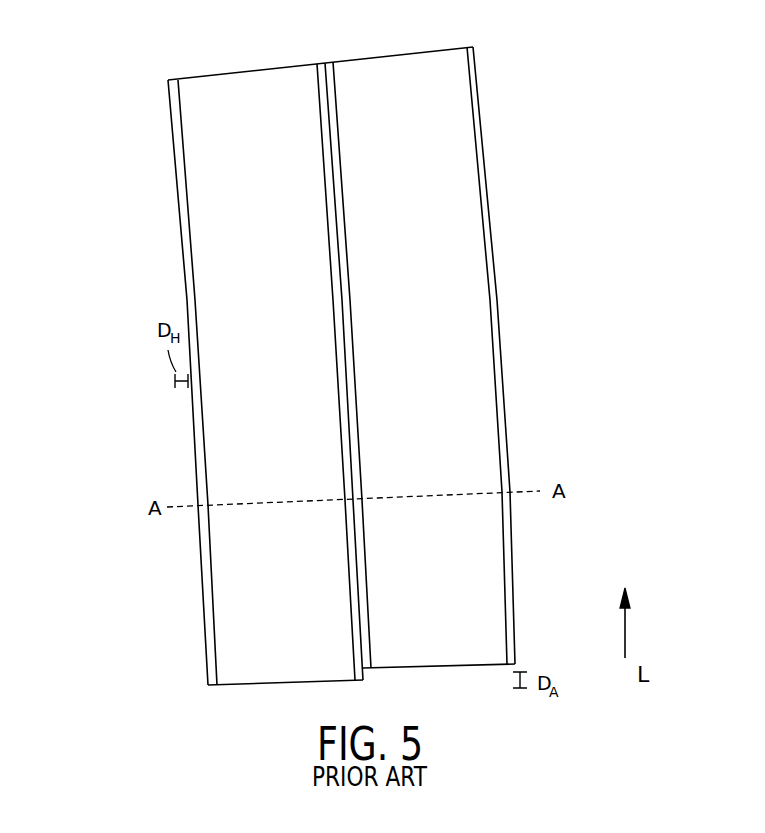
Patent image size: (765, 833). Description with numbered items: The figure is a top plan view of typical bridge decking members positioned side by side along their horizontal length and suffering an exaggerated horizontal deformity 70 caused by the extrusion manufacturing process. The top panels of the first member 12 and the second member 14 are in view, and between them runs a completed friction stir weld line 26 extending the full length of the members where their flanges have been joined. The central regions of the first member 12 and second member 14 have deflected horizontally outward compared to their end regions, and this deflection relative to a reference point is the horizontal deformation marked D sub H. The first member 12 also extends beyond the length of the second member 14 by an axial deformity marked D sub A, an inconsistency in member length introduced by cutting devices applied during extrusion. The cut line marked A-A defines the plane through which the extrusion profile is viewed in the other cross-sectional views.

The horizontal deformity 70 is at (281, 352).
The first member 12 is at (187, 118).
The second member 14 is at (457, 108).
The joint/seam between panels 26 is at (321, 63).